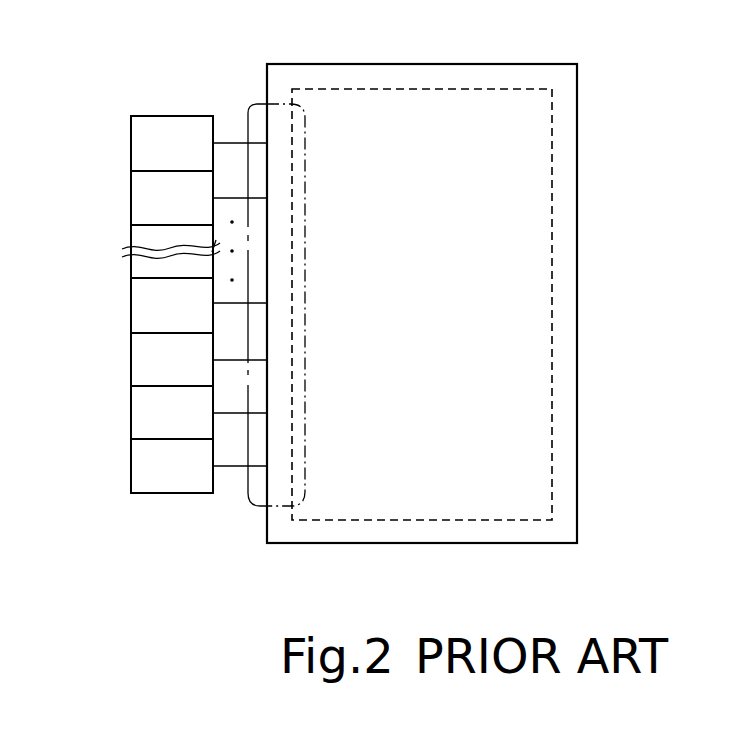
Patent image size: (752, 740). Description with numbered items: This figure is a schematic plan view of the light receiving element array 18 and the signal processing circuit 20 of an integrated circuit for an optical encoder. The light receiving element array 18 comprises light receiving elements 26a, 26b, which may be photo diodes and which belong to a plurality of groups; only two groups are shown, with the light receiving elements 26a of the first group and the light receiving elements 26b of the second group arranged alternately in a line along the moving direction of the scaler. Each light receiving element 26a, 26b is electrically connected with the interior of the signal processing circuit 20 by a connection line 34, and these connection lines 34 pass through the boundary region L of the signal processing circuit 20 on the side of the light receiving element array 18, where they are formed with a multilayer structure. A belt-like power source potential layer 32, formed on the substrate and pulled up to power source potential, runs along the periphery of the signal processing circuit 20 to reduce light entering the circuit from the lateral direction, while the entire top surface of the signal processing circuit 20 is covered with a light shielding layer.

The light receiving element array 18 is at (155, 100).
The signal processing circuit 20 is at (428, 64).
The light receiving element 26a is at (131, 212).
The light receiving element 26b is at (131, 153).
The power source potential layer 32 is at (359, 72).
The connection line 34 is at (232, 143).
The boundary region L is at (263, 103).